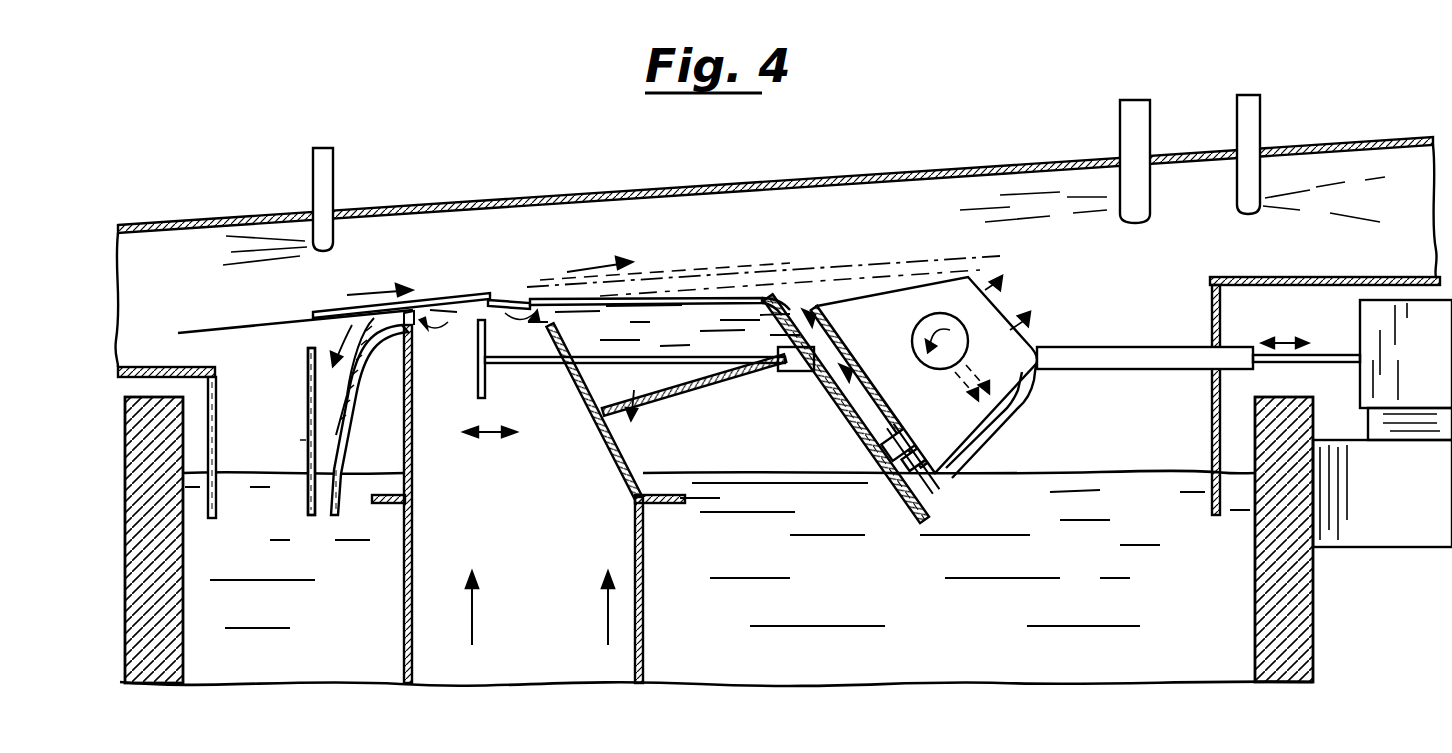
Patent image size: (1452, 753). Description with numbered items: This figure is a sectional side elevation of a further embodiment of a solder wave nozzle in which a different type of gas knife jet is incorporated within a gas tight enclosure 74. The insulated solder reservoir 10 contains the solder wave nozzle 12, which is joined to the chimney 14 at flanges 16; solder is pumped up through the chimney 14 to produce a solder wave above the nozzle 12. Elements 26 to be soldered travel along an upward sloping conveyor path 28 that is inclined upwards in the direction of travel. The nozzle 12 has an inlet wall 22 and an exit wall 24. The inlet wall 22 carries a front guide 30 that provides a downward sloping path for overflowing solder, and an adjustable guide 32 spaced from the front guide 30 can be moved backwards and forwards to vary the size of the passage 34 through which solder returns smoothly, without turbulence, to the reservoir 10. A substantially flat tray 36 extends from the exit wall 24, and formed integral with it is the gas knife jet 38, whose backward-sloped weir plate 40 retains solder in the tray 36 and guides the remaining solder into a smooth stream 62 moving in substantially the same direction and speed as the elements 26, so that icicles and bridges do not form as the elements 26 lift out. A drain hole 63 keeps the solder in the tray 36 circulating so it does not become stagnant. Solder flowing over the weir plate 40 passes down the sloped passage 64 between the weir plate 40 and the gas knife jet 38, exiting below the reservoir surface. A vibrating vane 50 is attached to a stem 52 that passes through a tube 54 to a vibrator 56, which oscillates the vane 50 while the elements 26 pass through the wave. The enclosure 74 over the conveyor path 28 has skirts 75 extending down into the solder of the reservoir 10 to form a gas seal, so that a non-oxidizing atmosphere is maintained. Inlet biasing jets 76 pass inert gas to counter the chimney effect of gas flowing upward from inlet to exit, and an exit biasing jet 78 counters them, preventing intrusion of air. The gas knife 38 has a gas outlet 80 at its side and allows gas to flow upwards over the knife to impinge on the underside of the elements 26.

The solder reservoir 10 is at (1306, 590).
The solder wave nozzle 12 is at (412, 313).
The chimney 14 is at (403, 587).
The flanges 16 is at (656, 506).
The inlet wall 22 is at (403, 440).
The exit wall 24 is at (628, 443).
The elements 26 is at (462, 300).
The conveyor path 28 is at (241, 326).
The front guide 30 is at (346, 383).
The adjustable guide 32 is at (307, 370).
The passage 34 is at (307, 440).
The tray 36 is at (712, 383).
The gas knife jet 38 is at (982, 322).
The weir plate 40 is at (872, 436).
The vibrating vane 50 is at (487, 385).
The stem 52 is at (1324, 352).
The tube 54 is at (1114, 366).
The vibrator 56 is at (1360, 318).
The solder stream 62 is at (678, 298).
The drain hole 63 is at (636, 388).
The passage 64 is at (828, 335).
The enclosure 74 is at (806, 180).
The skirts 75 is at (218, 504).
The inlet biasing jets 76 is at (333, 233).
The exit biasing jet 78 is at (1237, 197).
The gas outlet 80 is at (1030, 382).